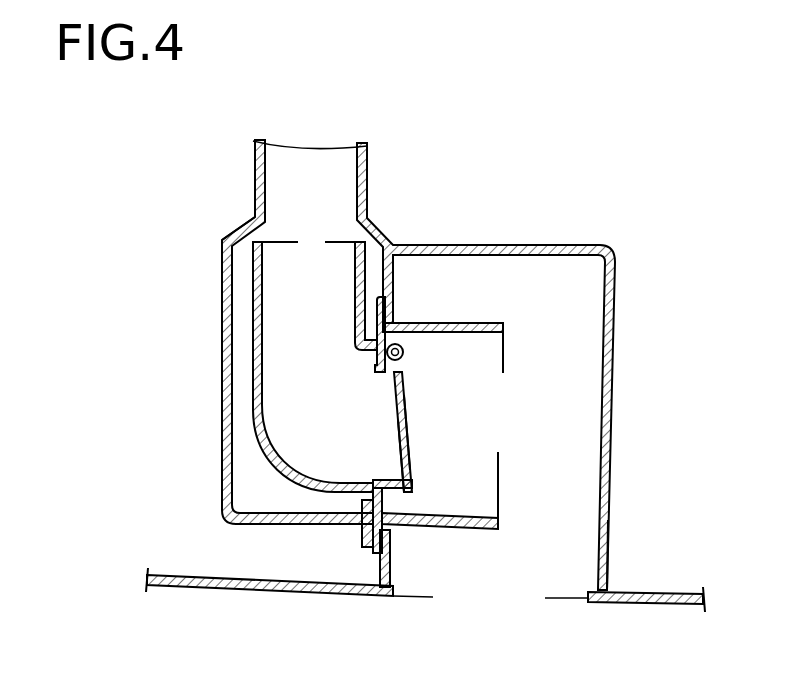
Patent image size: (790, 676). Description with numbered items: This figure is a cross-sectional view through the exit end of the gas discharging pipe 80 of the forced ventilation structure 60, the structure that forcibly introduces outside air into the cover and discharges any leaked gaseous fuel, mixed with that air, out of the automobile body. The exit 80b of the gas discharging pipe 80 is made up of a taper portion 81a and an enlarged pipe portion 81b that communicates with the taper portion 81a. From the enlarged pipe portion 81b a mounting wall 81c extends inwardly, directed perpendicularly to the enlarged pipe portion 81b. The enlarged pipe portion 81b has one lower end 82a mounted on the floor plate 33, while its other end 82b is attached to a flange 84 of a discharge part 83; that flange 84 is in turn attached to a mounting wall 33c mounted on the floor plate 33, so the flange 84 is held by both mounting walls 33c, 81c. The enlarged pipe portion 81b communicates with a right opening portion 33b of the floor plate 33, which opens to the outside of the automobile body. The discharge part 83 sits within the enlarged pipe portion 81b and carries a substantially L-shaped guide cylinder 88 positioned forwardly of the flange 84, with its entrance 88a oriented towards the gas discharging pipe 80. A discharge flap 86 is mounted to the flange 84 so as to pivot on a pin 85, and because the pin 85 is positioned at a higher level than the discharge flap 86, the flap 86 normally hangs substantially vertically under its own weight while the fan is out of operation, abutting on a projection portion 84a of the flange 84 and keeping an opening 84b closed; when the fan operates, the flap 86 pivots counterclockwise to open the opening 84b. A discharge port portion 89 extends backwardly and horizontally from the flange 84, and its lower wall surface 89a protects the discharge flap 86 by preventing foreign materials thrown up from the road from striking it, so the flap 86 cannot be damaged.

The forced ventilation structure 60 is at (405, 128).
The gas discharging pipe 80 is at (257, 172).
The exit 80b is at (105, 262).
The taper portion 81a is at (228, 235).
The enlarged pipe portion 81b is at (223, 368).
The mounting wall 81c is at (433, 258).
The lower end 82a is at (607, 565).
The another end 82b is at (362, 530).
The discharge part 83 is at (528, 318).
The flange 84 is at (407, 297).
The projection portion 84a is at (390, 478).
The opening 84b is at (380, 427).
The pin 85 is at (402, 353).
The discharge flap 86 is at (410, 423).
The guide cylinder 88 is at (247, 398).
The entrance 88a is at (266, 266).
The discharge port portion 89 is at (475, 322).
The lower wall surface 89a is at (455, 530).
The floor plate 33 is at (672, 592).
The right opening portion 33b is at (575, 594).
The mounting wall 33c is at (370, 573).